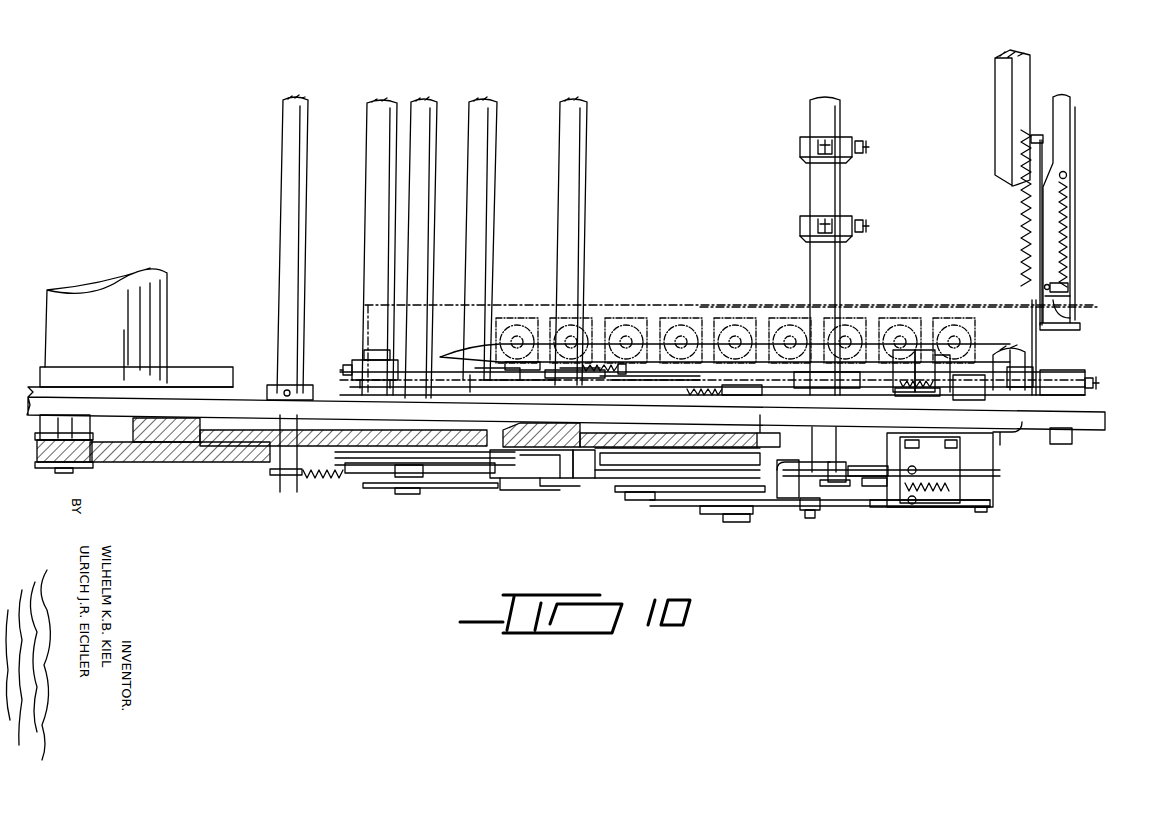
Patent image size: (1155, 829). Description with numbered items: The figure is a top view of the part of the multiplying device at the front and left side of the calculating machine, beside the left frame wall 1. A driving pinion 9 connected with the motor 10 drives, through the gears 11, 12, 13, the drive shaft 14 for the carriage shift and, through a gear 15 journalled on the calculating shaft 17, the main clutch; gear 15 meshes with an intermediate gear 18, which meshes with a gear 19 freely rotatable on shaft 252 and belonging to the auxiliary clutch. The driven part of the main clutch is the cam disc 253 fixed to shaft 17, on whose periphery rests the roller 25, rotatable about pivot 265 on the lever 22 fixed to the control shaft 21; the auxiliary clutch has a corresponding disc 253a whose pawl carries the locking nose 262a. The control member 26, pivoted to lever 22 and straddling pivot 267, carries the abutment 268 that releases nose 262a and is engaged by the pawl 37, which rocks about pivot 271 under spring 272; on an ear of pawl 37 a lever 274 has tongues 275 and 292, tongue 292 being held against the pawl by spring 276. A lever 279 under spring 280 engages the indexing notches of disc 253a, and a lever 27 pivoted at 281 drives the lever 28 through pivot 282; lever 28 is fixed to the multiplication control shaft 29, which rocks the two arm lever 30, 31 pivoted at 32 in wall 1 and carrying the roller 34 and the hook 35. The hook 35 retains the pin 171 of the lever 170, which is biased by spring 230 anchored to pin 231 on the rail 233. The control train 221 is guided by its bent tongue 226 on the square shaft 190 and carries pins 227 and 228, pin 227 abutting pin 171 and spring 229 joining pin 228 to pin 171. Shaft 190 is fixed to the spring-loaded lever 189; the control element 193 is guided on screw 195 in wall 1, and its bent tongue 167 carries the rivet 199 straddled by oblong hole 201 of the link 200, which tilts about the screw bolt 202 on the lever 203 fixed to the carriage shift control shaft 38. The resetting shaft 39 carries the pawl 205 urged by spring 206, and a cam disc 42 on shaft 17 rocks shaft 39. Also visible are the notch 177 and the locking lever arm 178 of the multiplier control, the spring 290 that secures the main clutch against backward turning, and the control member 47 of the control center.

The frame wall 1 is at (248, 400).
The driving pinion 9 is at (80, 466).
The motor 10 is at (137, 318).
The gear 11 is at (125, 466).
The gear 12 is at (185, 416).
The gear 13 is at (217, 462).
The drive shaft 14 is at (292, 125).
The gear 15 is at (335, 415).
The main actuating shaft 17 is at (418, 107).
The intermediate gear 18 is at (532, 433).
The gear 19 is at (607, 436).
The control shaft 21 is at (478, 107).
The lever 22 is at (500, 472).
The roller 25 is at (540, 482).
The control member 26 is at (555, 482).
The lever 27 is at (678, 510).
The lever 28 is at (832, 488).
The control shaft 29 is at (822, 174).
The lever arm 30 is at (766, 432).
The lever arm 31 is at (1015, 432).
The pivot 32 is at (905, 470).
The roller 34 is at (725, 516).
The hook 35 is at (1028, 330).
The pawl 37 is at (812, 480).
The control shaft 38 is at (378, 107).
The shaft 39 is at (572, 118).
The cam disc 42 is at (465, 490).
The control member 47 is at (432, 492).
The bent tongue 167 is at (925, 352).
The lever 170 is at (1015, 295).
The pin 171 is at (1072, 296).
The notch 177 is at (487, 345).
The lever arm 178 is at (540, 332).
The lever 189 is at (1078, 395).
The square shaft 190 is at (1060, 445).
The control element 193 is at (985, 365).
The screw 195 is at (950, 355).
The rivet 199 is at (897, 365).
The link 200 is at (660, 352).
The oblong hole 201 is at (912, 360).
The screw bolt 202 is at (380, 350).
The lever 203 is at (358, 362).
The pawl 205 is at (515, 355).
The spring 206 is at (600, 355).
The control train 221 is at (1066, 103).
The bent tongue 226 is at (1072, 312).
The pin 227 is at (1068, 288).
The pin 228 is at (1066, 173).
The spring 229 is at (1068, 237).
The tension spring 230 is at (1023, 223).
The pin 231 is at (1035, 140).
The connecting rail 233 is at (1002, 99).
The shaft 252 is at (660, 430).
The disc 253 is at (340, 470).
The disc 253a is at (620, 476).
The locking nose 262a is at (575, 480).
The pivot 265 is at (512, 472).
The pivot 267 is at (783, 500).
The abutment 268 is at (587, 465).
The pivot 271 is at (985, 512).
The tension spring 272 is at (916, 470).
The lever 274 is at (860, 478).
The tongue 275 is at (872, 488).
The spring 276 is at (950, 492).
The lever 279 is at (905, 508).
The spring 280 is at (916, 502).
The pivot 281 is at (627, 475).
The pivot 282 is at (808, 520).
The tension spring 290 is at (315, 478).
The tongue 292 is at (858, 455).